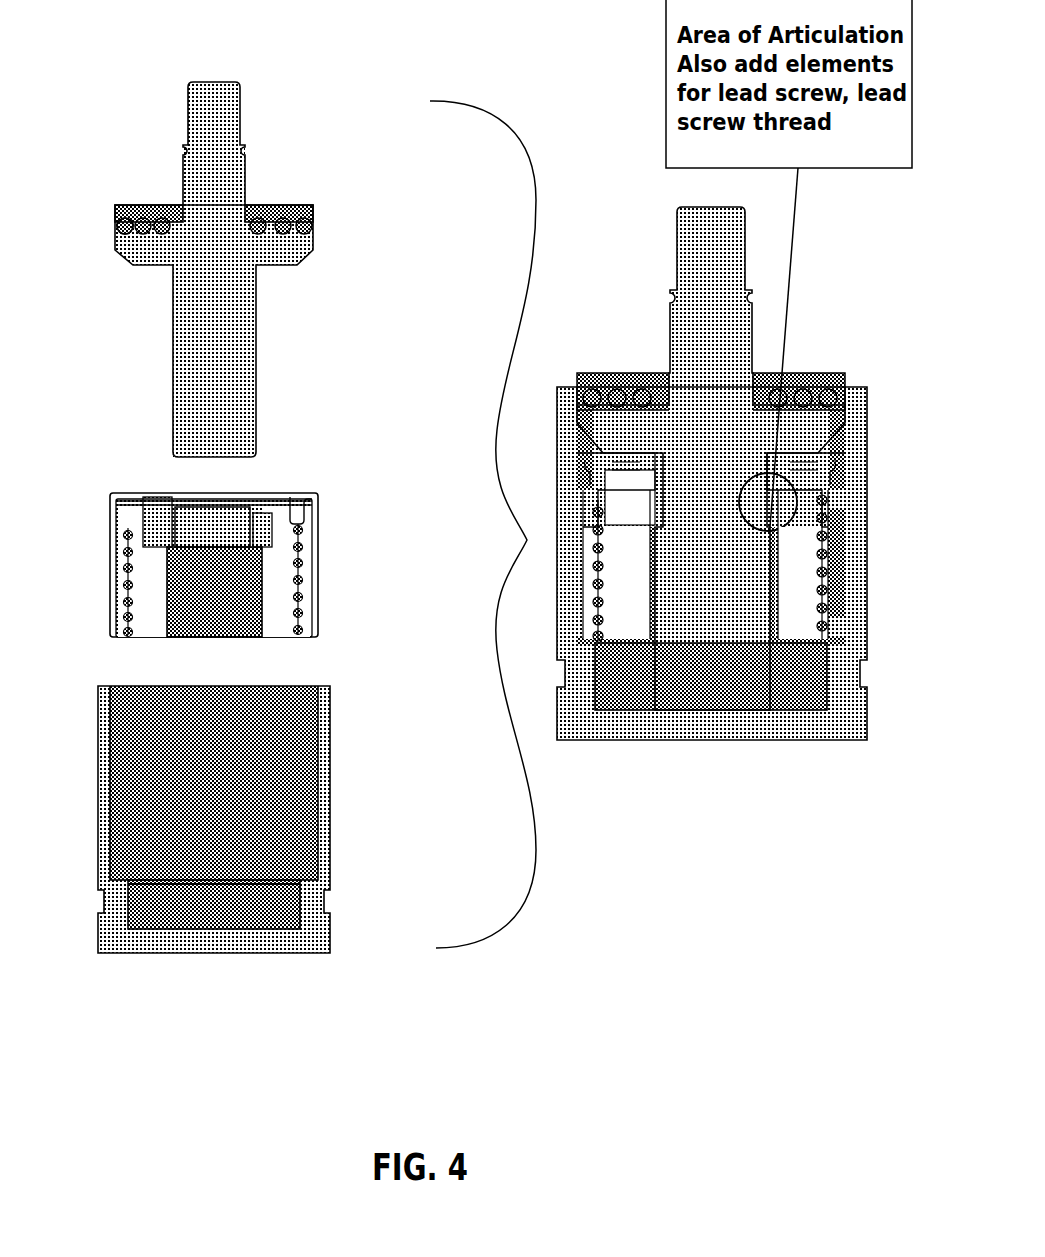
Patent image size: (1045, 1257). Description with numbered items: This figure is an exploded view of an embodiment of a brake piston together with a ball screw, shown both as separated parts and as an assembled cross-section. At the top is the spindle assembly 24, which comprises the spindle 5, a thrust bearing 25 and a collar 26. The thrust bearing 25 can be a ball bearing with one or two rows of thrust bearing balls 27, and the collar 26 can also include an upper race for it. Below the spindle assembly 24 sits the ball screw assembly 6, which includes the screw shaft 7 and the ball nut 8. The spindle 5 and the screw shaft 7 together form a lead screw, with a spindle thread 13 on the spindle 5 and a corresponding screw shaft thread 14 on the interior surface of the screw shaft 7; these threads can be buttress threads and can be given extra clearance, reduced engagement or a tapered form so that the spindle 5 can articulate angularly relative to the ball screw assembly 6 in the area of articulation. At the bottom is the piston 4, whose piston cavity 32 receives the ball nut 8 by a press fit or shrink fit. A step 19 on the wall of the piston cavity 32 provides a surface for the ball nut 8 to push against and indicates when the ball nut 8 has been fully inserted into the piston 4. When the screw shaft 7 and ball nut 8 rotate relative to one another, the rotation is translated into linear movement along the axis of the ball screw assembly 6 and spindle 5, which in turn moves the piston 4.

The piston 4 is at (335, 936).
The spindle 5 is at (220, 128).
The ball screw assembly 6 is at (229, 544).
The screw shaft 7 is at (280, 582).
The ball nut 8 is at (117, 572).
The spindle thread 13 is at (256, 332).
The screw shaft thread 14 is at (243, 520).
The step 19 is at (322, 882).
The spindle assembly 24 is at (325, 265).
The thrust bearing 25 is at (315, 226).
The collar 26 is at (283, 207).
The thrust bearing balls 27 is at (117, 222).
The piston cavity 32 is at (287, 776).